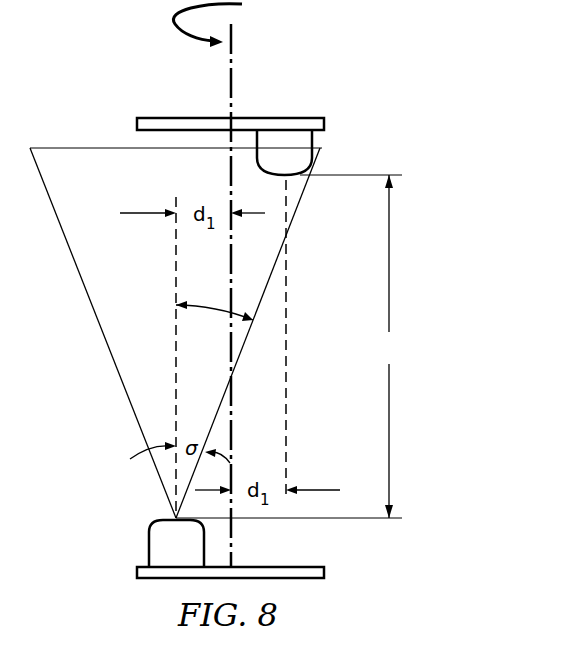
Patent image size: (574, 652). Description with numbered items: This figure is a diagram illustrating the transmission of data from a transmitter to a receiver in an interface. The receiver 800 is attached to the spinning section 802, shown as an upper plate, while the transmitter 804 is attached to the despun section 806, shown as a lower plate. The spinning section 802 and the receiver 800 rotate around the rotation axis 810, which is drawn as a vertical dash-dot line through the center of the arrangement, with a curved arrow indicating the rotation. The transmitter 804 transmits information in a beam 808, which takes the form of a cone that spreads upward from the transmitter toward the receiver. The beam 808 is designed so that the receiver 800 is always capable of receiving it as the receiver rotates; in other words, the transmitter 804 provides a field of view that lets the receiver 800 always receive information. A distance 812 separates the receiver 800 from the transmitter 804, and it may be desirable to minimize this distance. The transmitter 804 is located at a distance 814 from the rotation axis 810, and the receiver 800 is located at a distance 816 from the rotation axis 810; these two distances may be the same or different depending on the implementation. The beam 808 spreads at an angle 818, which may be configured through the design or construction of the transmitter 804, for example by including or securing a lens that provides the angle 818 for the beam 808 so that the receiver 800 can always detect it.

The receiver 800 is at (313, 142).
The spinning section 802 is at (137, 122).
The transmitter 804 is at (149, 554).
The despun section 806 is at (137, 572).
The beam 808 is at (103, 336).
The rotation axis 810 is at (233, 50).
The distance 812 is at (389, 437).
The distance 814 is at (138, 213).
The distance 816 is at (318, 490).
The angle 818 is at (130, 459).